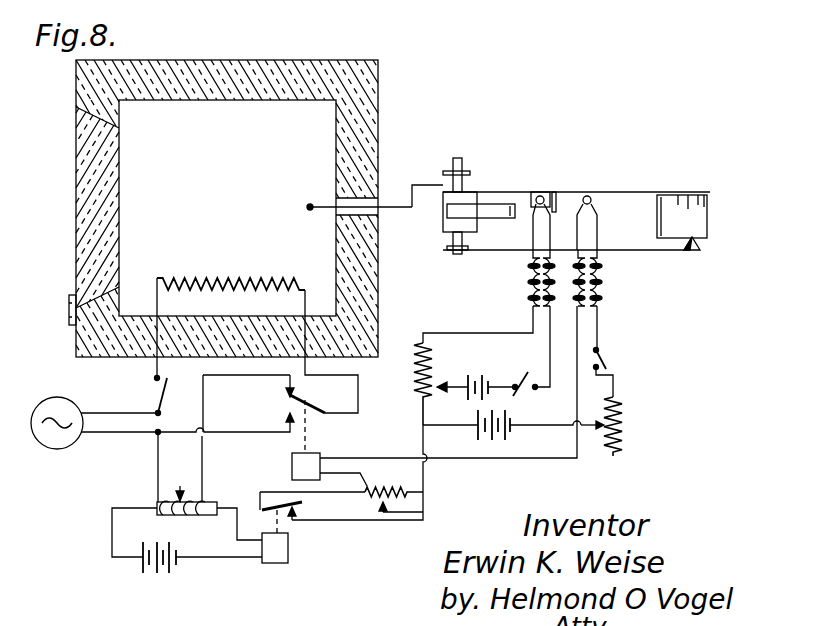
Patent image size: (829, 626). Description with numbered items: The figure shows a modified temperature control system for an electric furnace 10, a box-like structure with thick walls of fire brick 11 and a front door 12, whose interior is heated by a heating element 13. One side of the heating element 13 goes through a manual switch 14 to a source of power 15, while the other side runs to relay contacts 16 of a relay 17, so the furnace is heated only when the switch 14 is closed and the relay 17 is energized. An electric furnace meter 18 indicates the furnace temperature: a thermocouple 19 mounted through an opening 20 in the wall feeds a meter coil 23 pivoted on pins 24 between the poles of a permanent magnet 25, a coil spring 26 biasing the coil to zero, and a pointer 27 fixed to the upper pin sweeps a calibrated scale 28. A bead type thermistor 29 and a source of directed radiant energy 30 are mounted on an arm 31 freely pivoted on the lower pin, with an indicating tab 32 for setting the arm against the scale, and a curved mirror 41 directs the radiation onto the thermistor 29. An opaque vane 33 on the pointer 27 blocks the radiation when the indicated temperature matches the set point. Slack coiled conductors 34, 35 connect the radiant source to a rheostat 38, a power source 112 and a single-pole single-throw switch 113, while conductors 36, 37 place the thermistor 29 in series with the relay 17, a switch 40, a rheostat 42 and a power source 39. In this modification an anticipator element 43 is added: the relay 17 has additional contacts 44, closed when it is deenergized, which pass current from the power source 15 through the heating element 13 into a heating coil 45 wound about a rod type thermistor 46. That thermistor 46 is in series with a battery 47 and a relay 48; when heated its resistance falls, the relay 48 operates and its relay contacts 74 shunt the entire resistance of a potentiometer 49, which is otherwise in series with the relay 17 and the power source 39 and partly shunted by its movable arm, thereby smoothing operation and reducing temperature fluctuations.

The electric furnace 10 is at (263, 61).
The fire brick 11 is at (190, 72).
The door 12 is at (76, 228).
The heating element 13 is at (200, 277).
The manual switch 14 is at (150, 395).
The source of power 15 is at (55, 449).
The relay contacts 16 is at (282, 412).
The relay 17 is at (292, 462).
The electric furnace meter 18 is at (468, 210).
The thermocouple 19 is at (309, 205).
The opening 20 is at (412, 184).
The meter coil 23 is at (443, 230).
The pivot pins 24 is at (457, 158).
The permanent magnet 25 is at (500, 209).
The coil spring 26 is at (446, 171).
The pointer 27 is at (648, 191).
The calibrated scale 28 is at (707, 228).
The bead type thermistor 29 is at (590, 196).
The source of directed radiant energy 30 is at (548, 191).
The arm 31 is at (655, 252).
The indicating tab 32 is at (700, 251).
The opaque vane 33 is at (557, 200).
The conductor 34 is at (526, 286).
The conductor 35 is at (533, 318).
The conductor 36 is at (598, 307).
The conductor 37 is at (598, 322).
The rheostat 38 is at (414, 368).
The power source 39 is at (512, 430).
The switch 40 is at (606, 363).
The curved mirror 41 is at (537, 195).
The rheostat 42 is at (624, 419).
The anticipator element 43 is at (180, 486).
The contacts 44 is at (284, 397).
The heating coil 45 is at (188, 517).
The rod type thermistor 46 is at (204, 501).
The battery 47 is at (135, 578).
The relay 48 is at (288, 553).
The potentiometer 49 is at (376, 489).
The relay contacts 74 is at (298, 503).
The power source 112 is at (477, 374).
The single-pole single-throw switch 113 is at (525, 375).